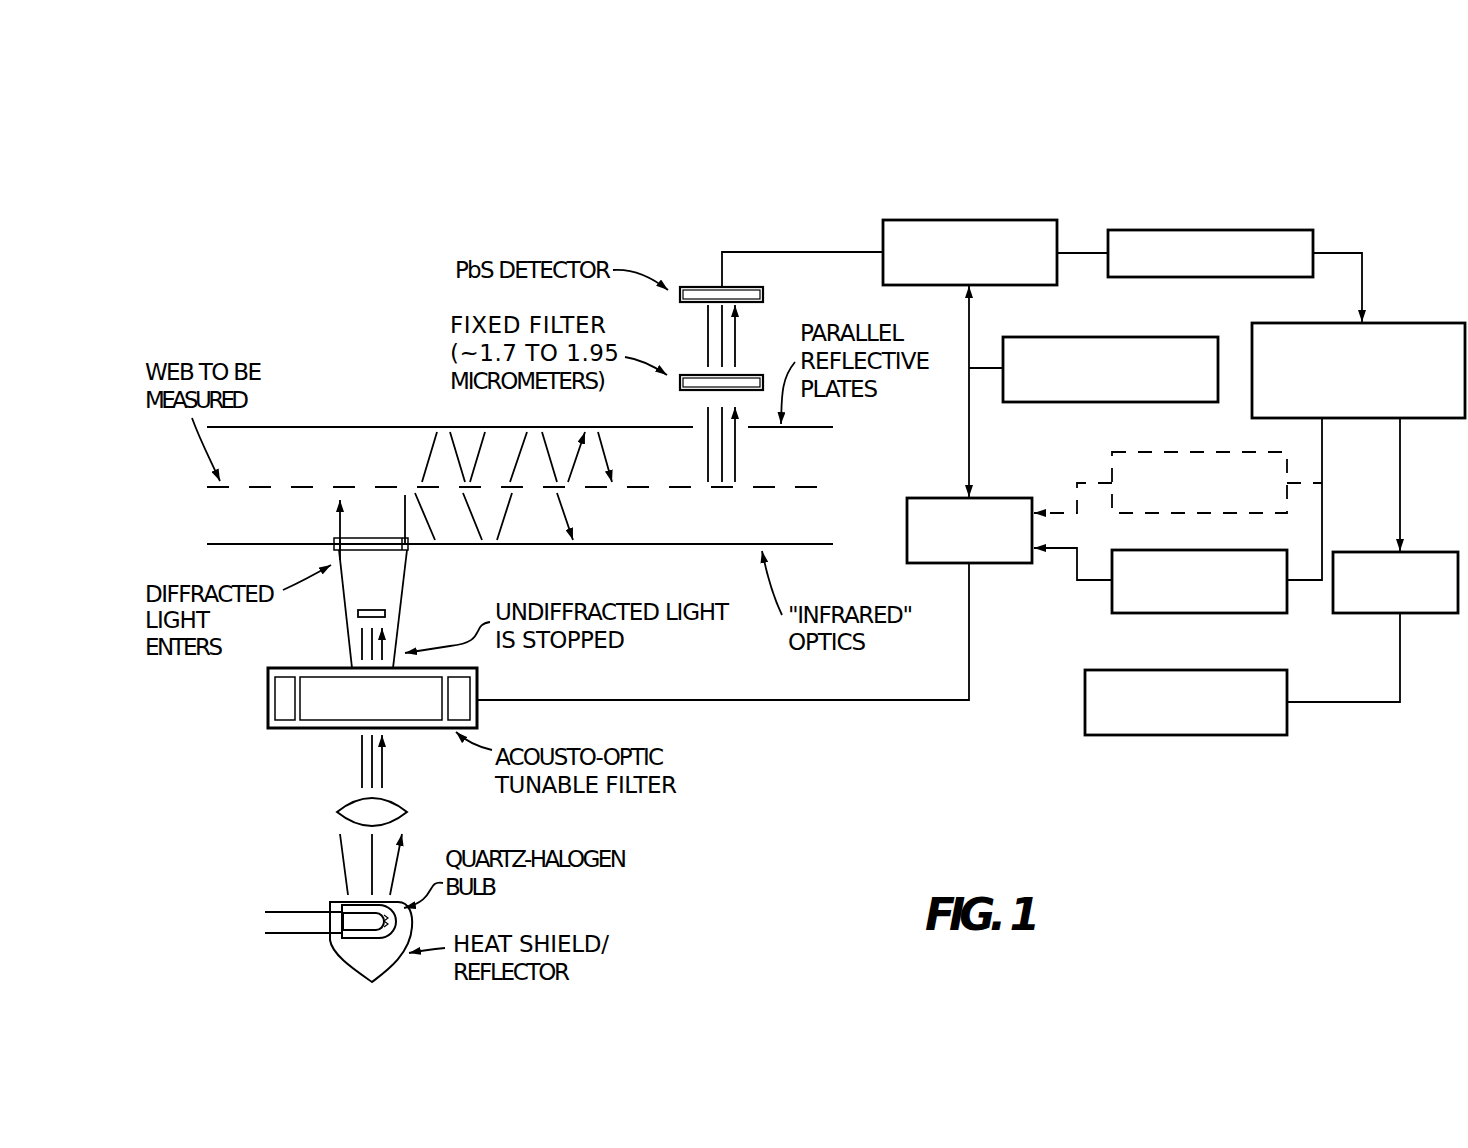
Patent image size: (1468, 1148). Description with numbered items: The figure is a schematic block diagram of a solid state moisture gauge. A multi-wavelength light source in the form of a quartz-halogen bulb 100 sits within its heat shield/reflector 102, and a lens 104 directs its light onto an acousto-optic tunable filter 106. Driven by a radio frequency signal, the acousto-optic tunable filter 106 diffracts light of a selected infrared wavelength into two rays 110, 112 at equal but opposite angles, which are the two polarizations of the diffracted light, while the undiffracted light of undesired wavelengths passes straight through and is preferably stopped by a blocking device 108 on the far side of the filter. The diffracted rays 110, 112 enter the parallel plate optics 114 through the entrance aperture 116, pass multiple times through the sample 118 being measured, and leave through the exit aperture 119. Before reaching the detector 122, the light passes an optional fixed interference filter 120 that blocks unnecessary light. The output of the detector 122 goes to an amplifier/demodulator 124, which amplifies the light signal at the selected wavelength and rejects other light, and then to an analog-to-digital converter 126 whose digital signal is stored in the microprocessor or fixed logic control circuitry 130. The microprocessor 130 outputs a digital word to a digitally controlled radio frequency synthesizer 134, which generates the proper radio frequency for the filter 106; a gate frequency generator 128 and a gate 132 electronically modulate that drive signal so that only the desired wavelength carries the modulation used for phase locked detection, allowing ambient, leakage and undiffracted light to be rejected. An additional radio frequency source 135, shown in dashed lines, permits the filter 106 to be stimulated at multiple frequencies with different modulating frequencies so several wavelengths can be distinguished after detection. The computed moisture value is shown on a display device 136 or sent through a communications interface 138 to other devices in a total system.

The quartz-halogen bulb 100 is at (347, 940).
The heat shield/reflector 102 is at (387, 970).
The lens 104 is at (345, 800).
The acousto-optic tunable filter 106 is at (268, 712).
The blocking device 108 is at (374, 609).
The diffracted light ray 110 is at (404, 562).
The diffracted light ray 112 is at (347, 625).
The parallel plate optics 114 is at (812, 538).
The entrance aperture 116 is at (360, 537).
The sample 118 is at (336, 487).
The exit aperture 119 is at (746, 428).
The fixed interference filter 120 is at (680, 385).
The detector 122 is at (688, 303).
The amplifier/demodulator 124 is at (1007, 220).
The analog-to-digital converter 126 is at (1272, 230).
The gate frequency generator 128 is at (1163, 337).
The microprocessor or fixed logic control circuitry 130 is at (1417, 300).
The gate 132 is at (1020, 498).
The digitally controlled radio frequency synthesizer 134 is at (1112, 593).
The radio frequency source 135 is at (1112, 452).
The display device 136 is at (1418, 552).
The communications interface 138 is at (1243, 670).